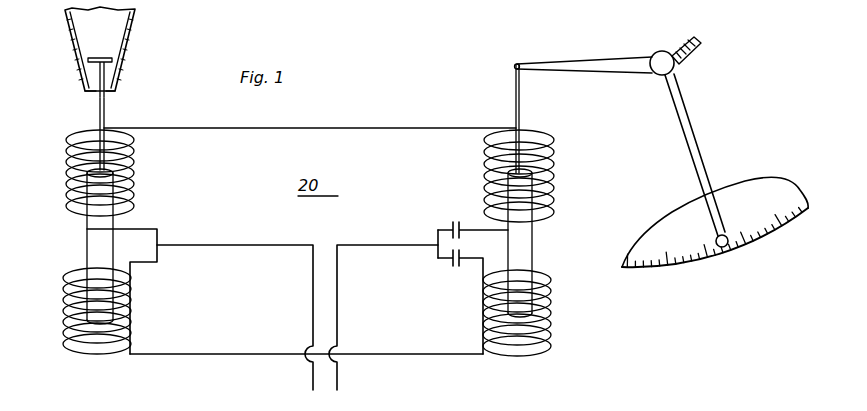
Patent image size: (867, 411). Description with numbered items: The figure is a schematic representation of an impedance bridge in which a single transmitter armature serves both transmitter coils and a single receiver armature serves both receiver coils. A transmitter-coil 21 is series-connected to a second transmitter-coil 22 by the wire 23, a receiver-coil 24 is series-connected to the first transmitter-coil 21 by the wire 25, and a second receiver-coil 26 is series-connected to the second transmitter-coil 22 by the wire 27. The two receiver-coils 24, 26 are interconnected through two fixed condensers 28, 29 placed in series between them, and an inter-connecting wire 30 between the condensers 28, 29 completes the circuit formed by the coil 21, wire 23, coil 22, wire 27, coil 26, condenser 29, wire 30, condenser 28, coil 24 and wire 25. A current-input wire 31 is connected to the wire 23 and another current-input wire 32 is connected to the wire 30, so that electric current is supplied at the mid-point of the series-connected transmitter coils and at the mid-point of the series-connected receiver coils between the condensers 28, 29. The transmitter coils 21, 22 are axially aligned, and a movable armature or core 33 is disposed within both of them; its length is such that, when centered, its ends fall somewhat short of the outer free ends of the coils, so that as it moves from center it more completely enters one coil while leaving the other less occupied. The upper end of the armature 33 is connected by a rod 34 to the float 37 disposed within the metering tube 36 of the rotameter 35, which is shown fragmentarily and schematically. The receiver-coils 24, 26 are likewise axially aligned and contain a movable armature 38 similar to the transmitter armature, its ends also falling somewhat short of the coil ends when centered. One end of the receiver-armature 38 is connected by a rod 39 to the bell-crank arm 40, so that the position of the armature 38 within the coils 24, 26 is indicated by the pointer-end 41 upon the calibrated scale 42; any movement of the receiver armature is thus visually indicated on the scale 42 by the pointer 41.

The transmitter-coil 21 is at (135, 168).
The second transmitter-coil 22 is at (132, 301).
The wire 23 is at (160, 234).
The receiver-coil 24 is at (483, 172).
The wire 25 is at (337, 127).
The second receiver-coil 26 is at (483, 318).
The wire 27 is at (263, 353).
The fixed condenser 28 is at (461, 222).
The fixed condenser 29 is at (461, 265).
The inter-connecting wire 30 is at (438, 238).
The current-input wire 31 is at (312, 282).
The current-input wire 32 is at (340, 300).
The armature 33 is at (97, 247).
The rod 34 is at (106, 112).
The rotameter 35 is at (118, 75).
The metering tube 36 is at (133, 38).
The float 37 is at (92, 55).
The armature 38 is at (530, 246).
The rod 39 is at (515, 110).
The bell-crank arm 40 is at (620, 60).
The pointer-end 41 is at (728, 232).
The calibrated scale 42 is at (778, 192).